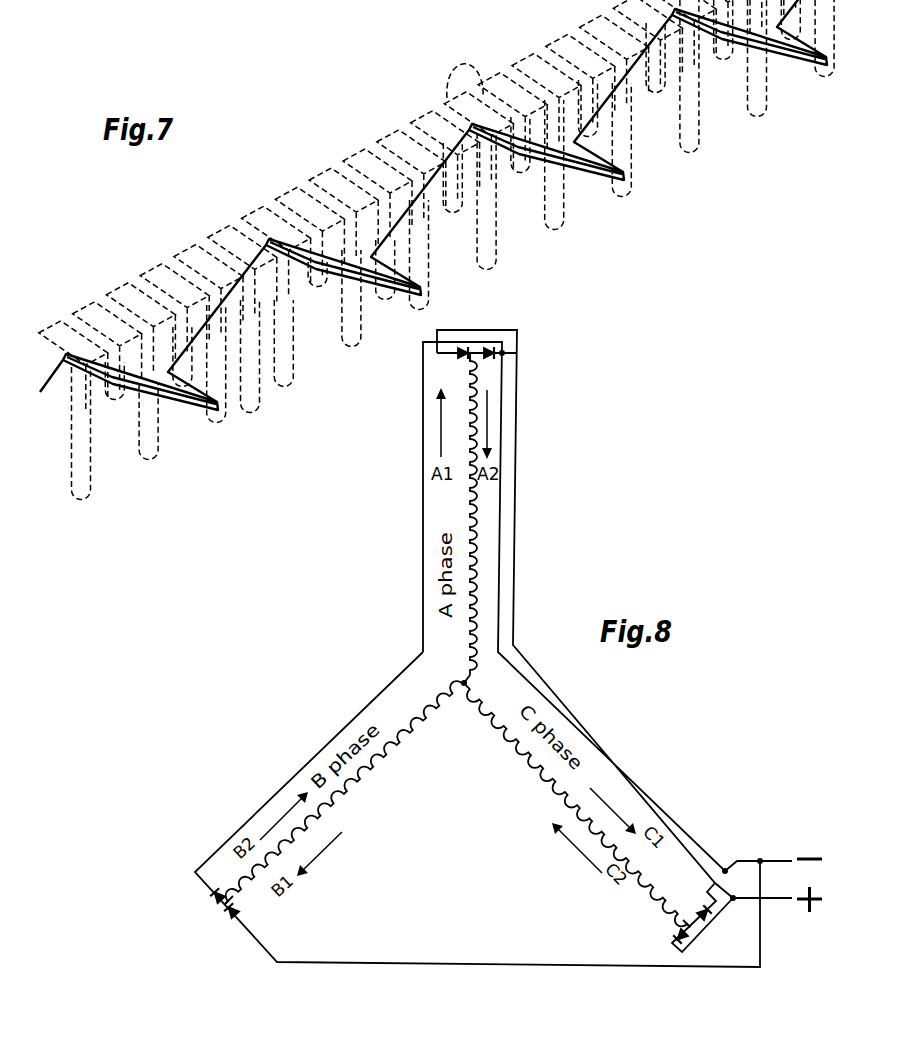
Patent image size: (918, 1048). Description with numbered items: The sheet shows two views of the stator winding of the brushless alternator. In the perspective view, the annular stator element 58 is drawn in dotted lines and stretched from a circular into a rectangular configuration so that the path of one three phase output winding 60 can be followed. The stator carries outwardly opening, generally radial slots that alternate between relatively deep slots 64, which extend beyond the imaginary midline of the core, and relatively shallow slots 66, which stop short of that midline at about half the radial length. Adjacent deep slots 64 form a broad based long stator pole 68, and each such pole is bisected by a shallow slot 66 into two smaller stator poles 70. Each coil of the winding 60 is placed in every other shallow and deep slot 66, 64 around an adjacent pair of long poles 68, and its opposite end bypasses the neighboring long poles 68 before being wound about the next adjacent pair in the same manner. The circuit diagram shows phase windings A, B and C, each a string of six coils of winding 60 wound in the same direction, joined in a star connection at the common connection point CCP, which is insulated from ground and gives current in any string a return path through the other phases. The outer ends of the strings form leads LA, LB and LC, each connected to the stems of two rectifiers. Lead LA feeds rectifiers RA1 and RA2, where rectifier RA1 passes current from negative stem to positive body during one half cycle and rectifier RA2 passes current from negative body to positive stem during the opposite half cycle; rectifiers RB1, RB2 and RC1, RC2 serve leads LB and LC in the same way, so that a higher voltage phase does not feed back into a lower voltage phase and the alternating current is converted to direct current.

In FIG. 7, the stator element 58 is at (343, 142).
In FIG. 7, the output winding 60 is at (578, 168).
In FIG. 8, the output winding 60 is at (478, 597).
In FIG. 7, the deep slot 64 is at (268, 363).
In FIG. 7, the shallow slot 66 is at (229, 369).
In FIG. 7, the long stator pole 68 is at (522, 216).
In FIG. 7, the short stator pole 70 is at (452, 66).
In FIG. 8, the rectifier RA1 is at (492, 349).
In FIG. 8, the rectifier RA2 is at (466, 349).
In FIG. 8, the rectifier RB1 is at (214, 901).
In FIG. 8, the rectifier RB2 is at (233, 919).
In FIG. 8, the rectifier RC1 is at (678, 936).
In FIG. 8, the rectifier RC2 is at (708, 915).
In FIG. 8, the lead LA is at (477, 366).
In FIG. 8, the lead LB is at (240, 905).
In FIG. 8, the lead LC is at (688, 926).
In FIG. 8, the common connection point CCP is at (462, 681).